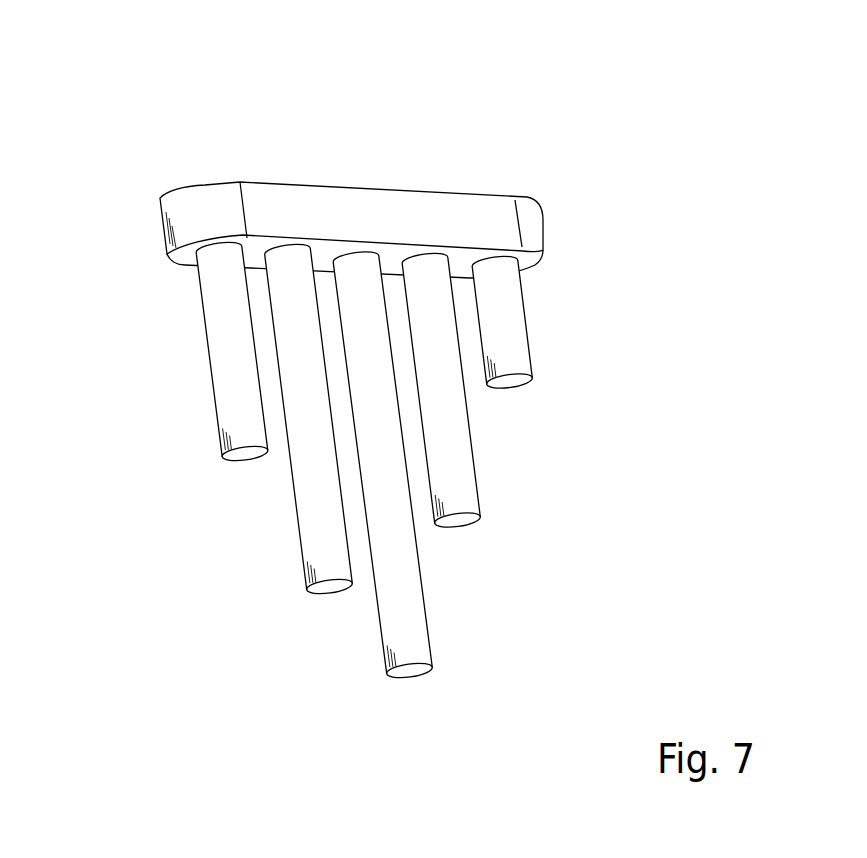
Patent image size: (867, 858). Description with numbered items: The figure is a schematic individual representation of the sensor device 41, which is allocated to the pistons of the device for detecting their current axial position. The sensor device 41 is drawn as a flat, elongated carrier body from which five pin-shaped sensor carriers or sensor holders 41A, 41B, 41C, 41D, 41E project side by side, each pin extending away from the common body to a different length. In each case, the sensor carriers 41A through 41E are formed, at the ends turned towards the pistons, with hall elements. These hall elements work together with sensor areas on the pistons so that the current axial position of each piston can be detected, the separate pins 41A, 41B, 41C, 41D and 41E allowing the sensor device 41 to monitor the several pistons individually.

The sensor device 41 is at (450, 155).
The sensor carrier 41A is at (375, 652).
The sensor carrier 41B is at (213, 437).
The sensor carrier 41C is at (515, 392).
The sensor carrier 41D is at (467, 533).
The sensor carrier 41E is at (298, 565).